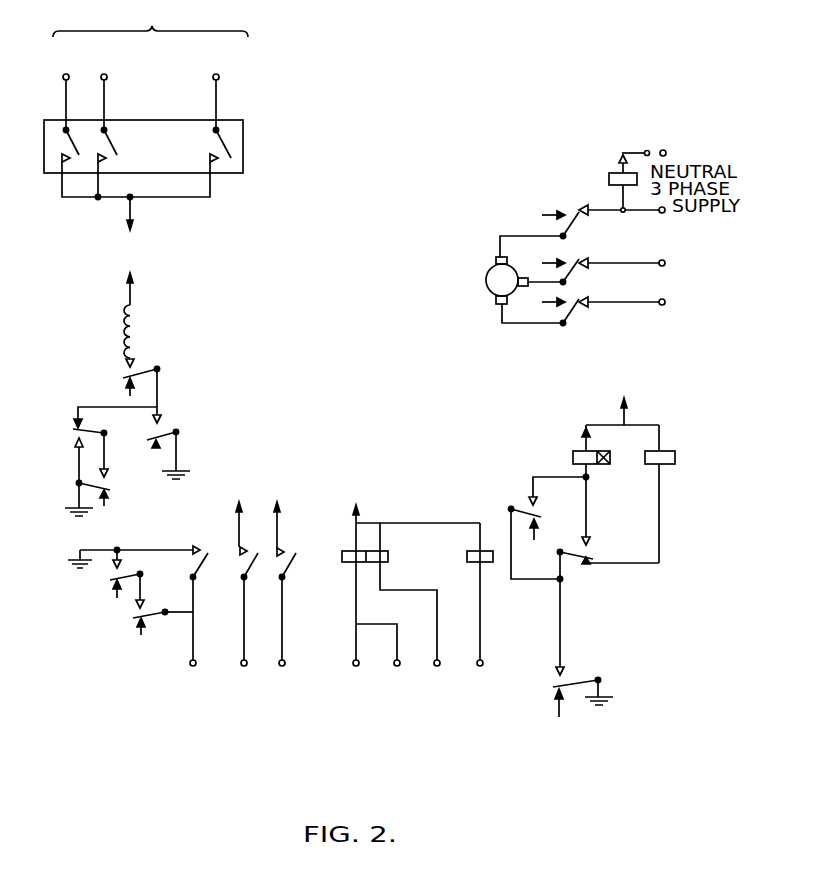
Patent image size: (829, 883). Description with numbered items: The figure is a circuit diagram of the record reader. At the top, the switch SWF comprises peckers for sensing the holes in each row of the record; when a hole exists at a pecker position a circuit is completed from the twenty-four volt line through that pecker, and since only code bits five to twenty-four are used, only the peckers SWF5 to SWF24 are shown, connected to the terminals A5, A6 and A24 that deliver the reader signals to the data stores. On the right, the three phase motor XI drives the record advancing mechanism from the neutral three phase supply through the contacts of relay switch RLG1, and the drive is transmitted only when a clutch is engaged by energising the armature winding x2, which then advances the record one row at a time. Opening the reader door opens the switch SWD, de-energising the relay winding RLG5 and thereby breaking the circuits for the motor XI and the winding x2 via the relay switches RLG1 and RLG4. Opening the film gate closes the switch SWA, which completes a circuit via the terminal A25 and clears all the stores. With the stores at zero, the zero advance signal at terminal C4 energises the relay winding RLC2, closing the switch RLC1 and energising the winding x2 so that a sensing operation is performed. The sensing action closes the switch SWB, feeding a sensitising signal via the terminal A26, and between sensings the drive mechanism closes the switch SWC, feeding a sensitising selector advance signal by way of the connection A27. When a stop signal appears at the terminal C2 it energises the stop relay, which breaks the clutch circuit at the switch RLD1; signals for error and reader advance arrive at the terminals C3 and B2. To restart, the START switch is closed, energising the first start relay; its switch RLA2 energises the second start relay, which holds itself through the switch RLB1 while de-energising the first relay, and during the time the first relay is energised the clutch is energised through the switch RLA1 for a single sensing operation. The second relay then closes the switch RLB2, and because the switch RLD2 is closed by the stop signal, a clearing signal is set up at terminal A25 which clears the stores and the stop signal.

The switch SWF is at (146, 118).
The terminal A5 is at (68, 91).
The terminal A6 is at (103, 91).
The terminal A24 is at (223, 91).
The pecker SWF5 is at (66, 133).
The pecker SWF24 is at (243, 143).
The switch SWD is at (641, 151).
The relay winding RLG5 is at (612, 191).
The relay switch RLG1 is at (578, 265).
The three phase motor XI is at (512, 279).
The armature winding x2 is at (158, 319).
The relay switch RLG4 is at (144, 394).
The relay switch RLD1 is at (72, 427).
The relay switch RLA1 is at (181, 444).
The relay switch RLC1 is at (112, 498).
The switch SWA is at (143, 591).
The switch SWB is at (246, 565).
The switch SWC is at (297, 560).
The relay switch RLD2 is at (481, 556).
The relay switch RLB2 is at (557, 460).
The terminal A25 is at (152, 708).
The terminal A26 is at (205, 730).
The connection A27 is at (273, 753).
The relay winding RLC2 is at (357, 556).
The terminal B2 is at (342, 752).
The terminal C4 is at (483, 746).
The terminal C3 is at (483, 725).
The terminal C2 is at (485, 702).
The relay switch RLA2 is at (700, 487).
The relay switch RLB1 is at (607, 612).
The start switch START is at (630, 686).